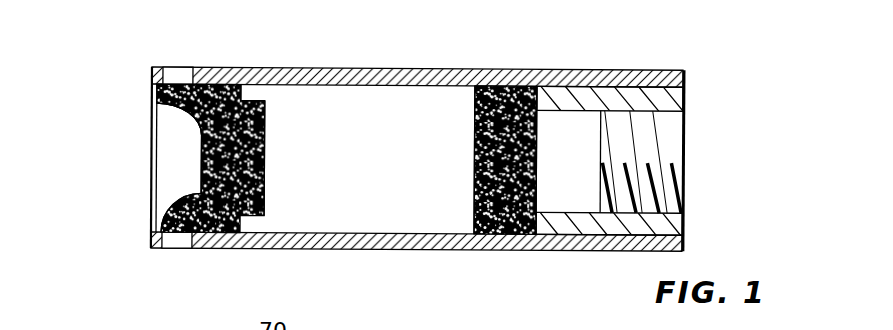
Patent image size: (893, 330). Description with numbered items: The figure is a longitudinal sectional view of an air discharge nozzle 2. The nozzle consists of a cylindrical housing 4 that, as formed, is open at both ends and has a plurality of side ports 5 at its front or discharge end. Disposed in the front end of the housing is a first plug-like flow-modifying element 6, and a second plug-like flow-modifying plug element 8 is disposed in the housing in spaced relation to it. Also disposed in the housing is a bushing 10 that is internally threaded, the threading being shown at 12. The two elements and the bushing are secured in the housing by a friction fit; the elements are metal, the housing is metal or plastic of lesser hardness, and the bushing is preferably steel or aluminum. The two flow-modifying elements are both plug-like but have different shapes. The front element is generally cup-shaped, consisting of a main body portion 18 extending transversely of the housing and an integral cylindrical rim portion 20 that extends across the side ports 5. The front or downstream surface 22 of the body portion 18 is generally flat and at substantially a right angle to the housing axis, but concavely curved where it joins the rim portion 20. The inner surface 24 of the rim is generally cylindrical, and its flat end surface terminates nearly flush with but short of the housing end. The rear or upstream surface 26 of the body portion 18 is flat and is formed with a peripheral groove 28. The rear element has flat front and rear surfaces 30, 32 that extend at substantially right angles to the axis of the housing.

The air discharge nozzle 2 is at (411, 157).
The cylindrical housing 4 is at (357, 68).
The side ports 5 is at (177, 72).
The first flow-modifying element 6 is at (181, 176).
The second flow-modifying plug element 8 is at (459, 184).
The bushing 10 is at (672, 98).
The internal threads 12 is at (668, 151).
The main body portion 18 is at (243, 185).
The cylindrical rim portion 20 is at (177, 222).
The front surface 22 is at (200, 146).
The inner surface 24 is at (165, 118).
The rear surface 26 is at (265, 156).
The peripheral groove 28 is at (243, 100).
The front surface 30 is at (475, 135).
The rear surface 32 is at (538, 166).